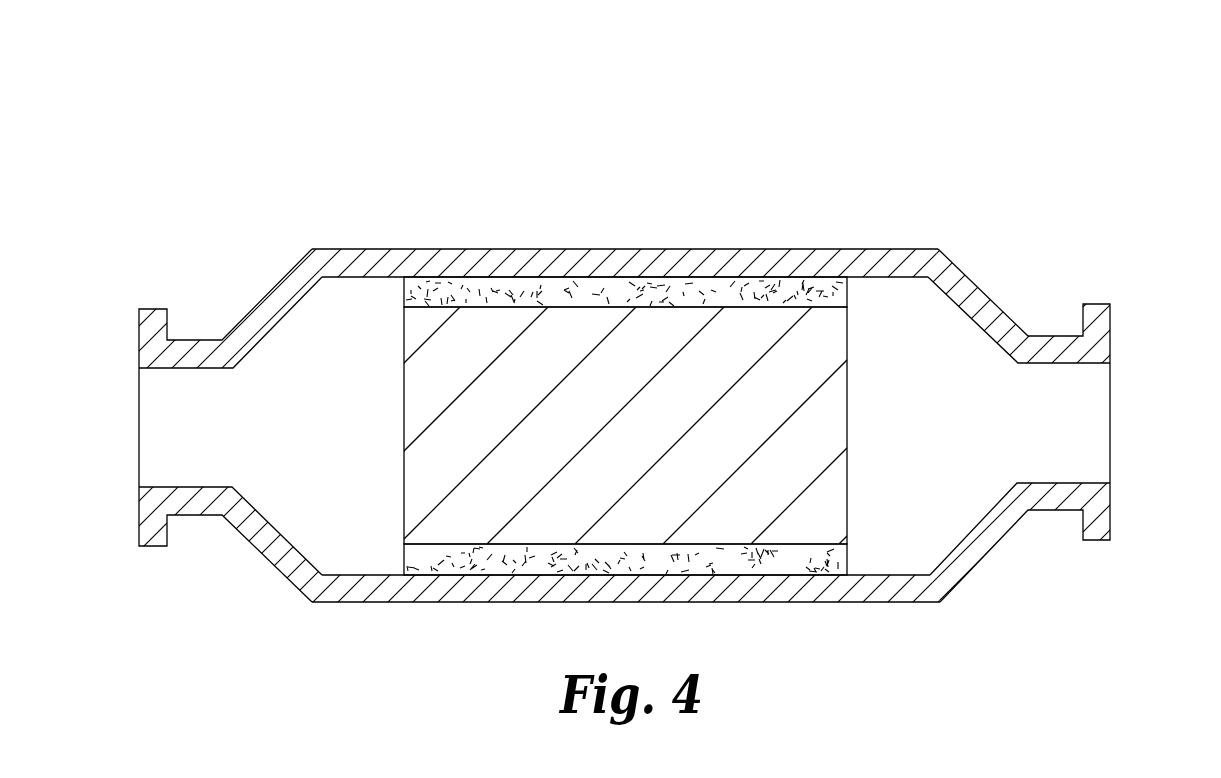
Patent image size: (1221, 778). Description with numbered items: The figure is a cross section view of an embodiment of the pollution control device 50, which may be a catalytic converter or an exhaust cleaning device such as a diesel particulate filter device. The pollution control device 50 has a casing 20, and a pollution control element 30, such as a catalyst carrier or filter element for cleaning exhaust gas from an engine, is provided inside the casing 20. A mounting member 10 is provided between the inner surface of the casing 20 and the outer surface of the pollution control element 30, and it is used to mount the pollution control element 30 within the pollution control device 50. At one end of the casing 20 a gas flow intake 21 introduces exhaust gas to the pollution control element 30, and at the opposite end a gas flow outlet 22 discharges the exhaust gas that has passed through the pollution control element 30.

The mounting member 10 is at (643, 295).
The casing 20 is at (898, 585).
The gas flow intake 21 is at (139, 427).
The gas flow outlet 22 is at (1111, 420).
The pollution control element 30 is at (822, 421).
The pollution control device 50 is at (610, 360).